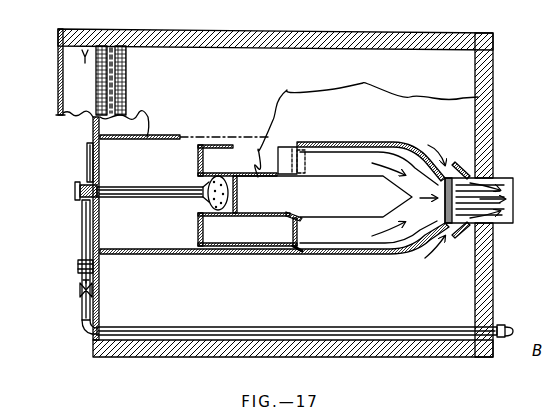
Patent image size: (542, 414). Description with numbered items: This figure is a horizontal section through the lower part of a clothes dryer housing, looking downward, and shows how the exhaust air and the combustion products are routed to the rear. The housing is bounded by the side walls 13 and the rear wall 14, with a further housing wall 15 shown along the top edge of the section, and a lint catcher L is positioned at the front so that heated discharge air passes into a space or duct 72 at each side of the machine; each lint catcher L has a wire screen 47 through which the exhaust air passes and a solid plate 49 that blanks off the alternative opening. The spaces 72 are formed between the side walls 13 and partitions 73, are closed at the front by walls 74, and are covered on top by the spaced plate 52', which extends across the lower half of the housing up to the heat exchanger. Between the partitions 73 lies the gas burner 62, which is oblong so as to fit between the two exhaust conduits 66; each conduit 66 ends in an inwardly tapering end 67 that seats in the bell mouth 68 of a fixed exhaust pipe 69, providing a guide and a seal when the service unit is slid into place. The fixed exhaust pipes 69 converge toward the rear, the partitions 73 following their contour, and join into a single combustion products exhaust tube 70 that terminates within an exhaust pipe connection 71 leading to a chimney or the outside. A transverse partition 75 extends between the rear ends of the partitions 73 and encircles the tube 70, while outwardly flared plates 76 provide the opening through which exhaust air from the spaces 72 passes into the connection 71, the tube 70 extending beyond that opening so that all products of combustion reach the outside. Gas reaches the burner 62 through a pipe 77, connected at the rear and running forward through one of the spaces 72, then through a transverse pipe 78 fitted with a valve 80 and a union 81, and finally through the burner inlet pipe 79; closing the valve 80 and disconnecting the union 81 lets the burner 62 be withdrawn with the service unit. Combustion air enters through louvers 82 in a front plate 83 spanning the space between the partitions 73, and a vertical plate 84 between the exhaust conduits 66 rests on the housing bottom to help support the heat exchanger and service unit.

The side wall 13 is at (383, 32).
The rear wall 14 is at (494, 82).
The top wall 15 is at (470, 33).
The wire screen 47 is at (128, 72).
The solid plate 49 is at (70, 82).
The spaced plate 52' is at (431, 106).
The gas burner 62 is at (207, 183).
The exhaust conduit 66 is at (218, 146).
The inwardly tapering end 67 is at (300, 165).
The bell mouth 68 is at (287, 147).
The fixed exhaust pipe 69 is at (378, 151).
The combustion products exhaust tube 70 is at (492, 179).
The exhaust pipe connection 71 is at (512, 180).
The space or duct 72 is at (345, 107).
The partition 73 is at (345, 143).
The wall 74 is at (108, 130).
The transverse partition 75 is at (437, 195).
The outwardly flared plate 76 is at (461, 163).
The gas supply pipe 77 is at (227, 328).
The transverse pipe 78 is at (82, 248).
The burner inlet pipe 79 is at (140, 198).
The valve 80 is at (80, 290).
The union 81 is at (78, 268).
The louvers 82 is at (89, 153).
The front plate 83 is at (100, 166).
The vertical plate 84 is at (238, 195).
The lint catcher L is at (84, 48).